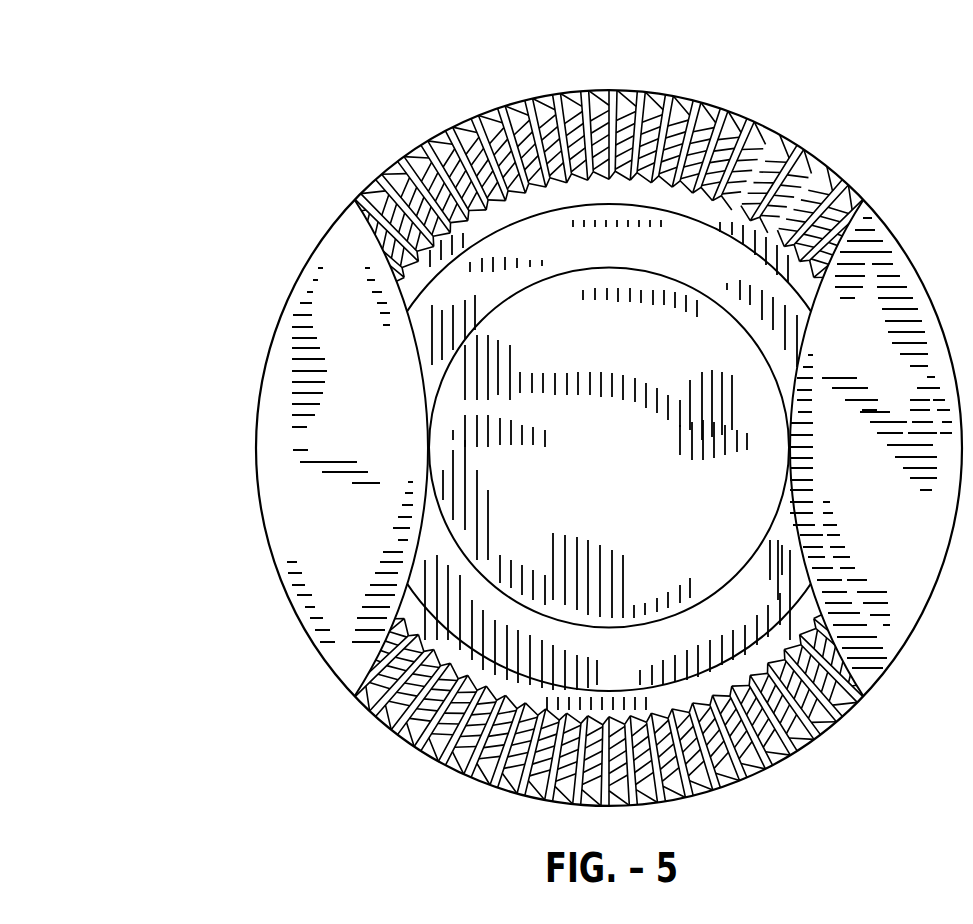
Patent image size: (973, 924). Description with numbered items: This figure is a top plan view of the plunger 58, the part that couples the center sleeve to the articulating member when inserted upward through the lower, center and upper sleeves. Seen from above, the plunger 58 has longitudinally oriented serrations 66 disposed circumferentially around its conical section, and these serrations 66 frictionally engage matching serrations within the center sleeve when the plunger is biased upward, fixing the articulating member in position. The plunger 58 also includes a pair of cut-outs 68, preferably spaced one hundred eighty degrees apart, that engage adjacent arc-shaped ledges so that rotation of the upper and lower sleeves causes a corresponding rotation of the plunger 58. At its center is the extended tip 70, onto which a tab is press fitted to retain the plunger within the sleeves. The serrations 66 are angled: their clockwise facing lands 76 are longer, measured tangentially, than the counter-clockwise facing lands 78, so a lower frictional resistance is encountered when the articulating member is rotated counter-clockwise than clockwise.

The plunger 58 is at (170, 222).
The serrations 66 is at (614, 417).
The cut-outs 68 is at (790, 498).
The extended tip 70 is at (753, 410).
The clockwise facing lands 76 is at (786, 157).
The counter-clockwise facing lands 78 is at (709, 106).